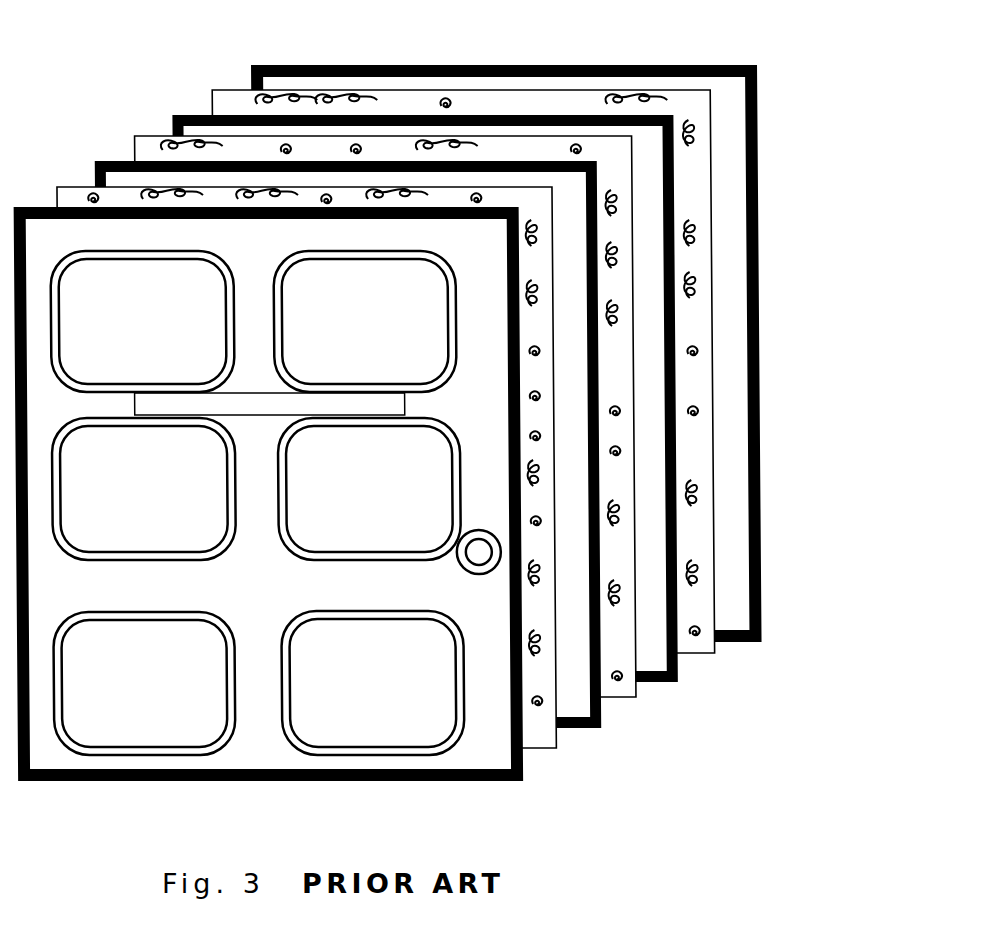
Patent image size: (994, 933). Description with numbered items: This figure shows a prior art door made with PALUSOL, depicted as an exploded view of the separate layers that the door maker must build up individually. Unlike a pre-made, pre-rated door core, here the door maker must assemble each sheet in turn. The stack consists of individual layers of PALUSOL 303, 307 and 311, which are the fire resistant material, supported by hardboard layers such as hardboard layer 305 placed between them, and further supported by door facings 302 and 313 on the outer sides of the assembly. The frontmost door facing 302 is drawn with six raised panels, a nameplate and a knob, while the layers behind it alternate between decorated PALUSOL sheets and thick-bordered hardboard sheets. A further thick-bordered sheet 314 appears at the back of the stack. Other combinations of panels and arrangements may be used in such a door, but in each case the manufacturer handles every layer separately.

The door facing 302 is at (398, 782).
The layer of PALUSOL 303 is at (542, 748).
The hardboard layer 305 is at (597, 728).
The layer of PALUSOL 307 is at (628, 697).
The layer of PALUSOL 311 is at (658, 682).
The door facing 313 is at (700, 653).
The back thick-bordered sheet 314 is at (602, 66).